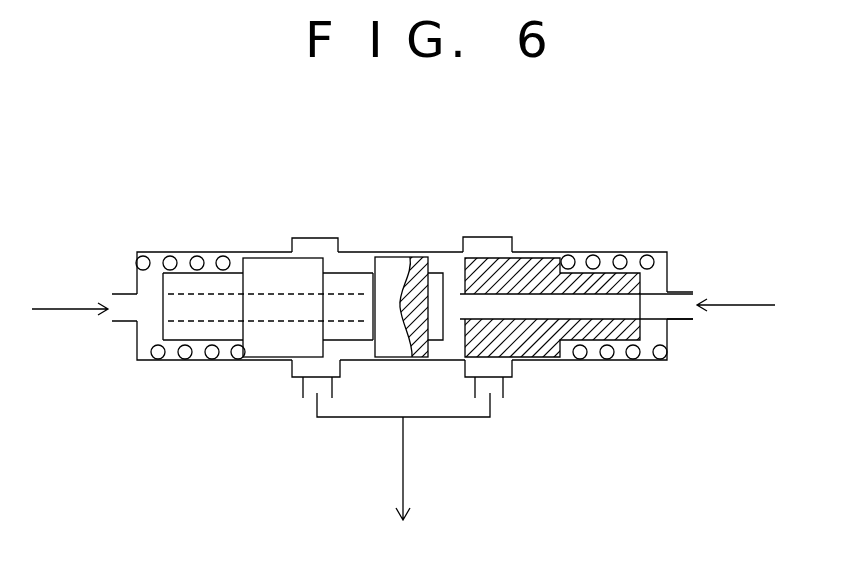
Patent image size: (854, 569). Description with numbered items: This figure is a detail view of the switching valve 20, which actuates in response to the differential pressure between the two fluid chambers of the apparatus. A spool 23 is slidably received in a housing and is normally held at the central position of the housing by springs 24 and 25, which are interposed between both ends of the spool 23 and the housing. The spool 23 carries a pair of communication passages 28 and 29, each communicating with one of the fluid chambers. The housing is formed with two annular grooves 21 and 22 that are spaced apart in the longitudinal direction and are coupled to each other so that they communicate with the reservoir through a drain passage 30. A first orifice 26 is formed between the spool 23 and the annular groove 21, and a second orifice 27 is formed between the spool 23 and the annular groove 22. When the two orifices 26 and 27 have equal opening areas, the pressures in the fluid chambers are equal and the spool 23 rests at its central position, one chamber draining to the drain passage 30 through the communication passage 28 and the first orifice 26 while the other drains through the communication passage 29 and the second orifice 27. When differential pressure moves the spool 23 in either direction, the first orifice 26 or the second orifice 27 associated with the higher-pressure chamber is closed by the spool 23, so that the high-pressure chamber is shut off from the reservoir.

The switching valve 20 is at (408, 226).
The annular groove 21 is at (320, 245).
The annular groove 22 is at (497, 242).
The spool 23 is at (272, 268).
The spring 24 is at (158, 359).
The spring 25 is at (633, 360).
The first orifice 26 is at (322, 369).
The second orifice 27 is at (482, 369).
The communication passage 28 is at (202, 305).
The communication passage 29 is at (575, 300).
The drain passage 30 is at (405, 472).